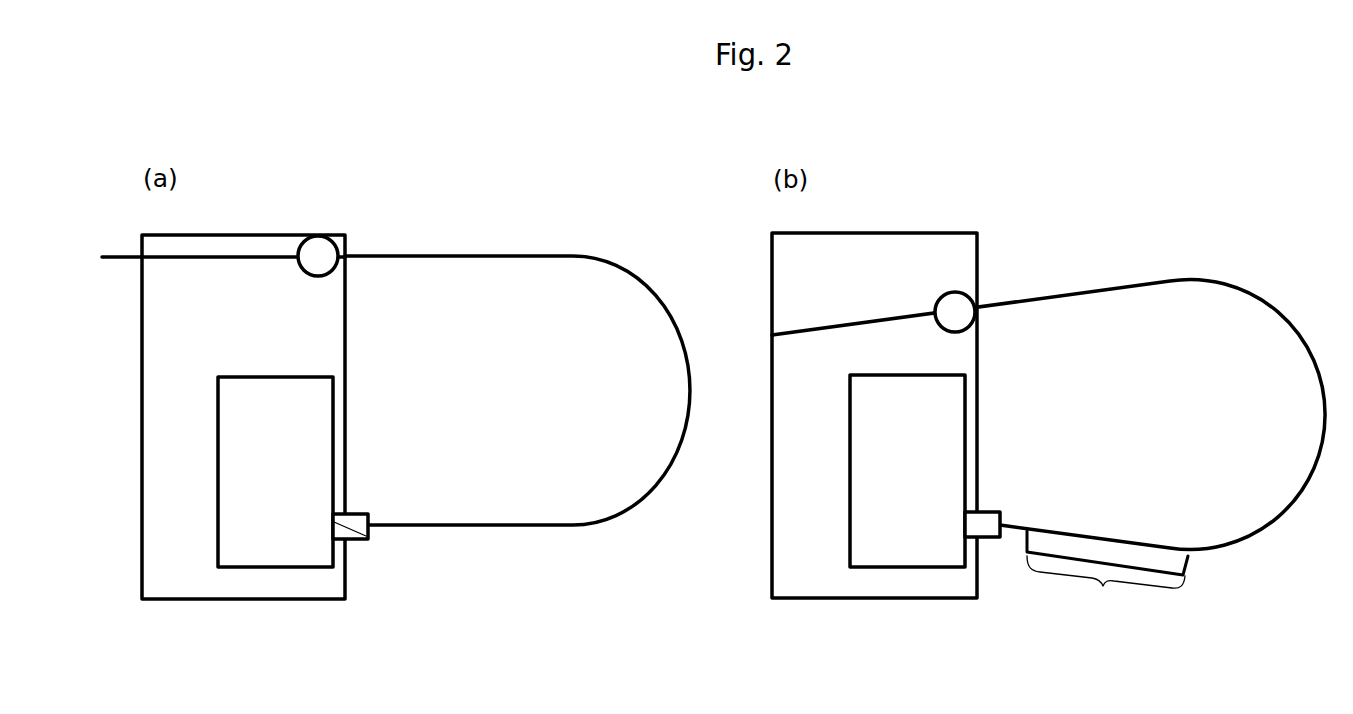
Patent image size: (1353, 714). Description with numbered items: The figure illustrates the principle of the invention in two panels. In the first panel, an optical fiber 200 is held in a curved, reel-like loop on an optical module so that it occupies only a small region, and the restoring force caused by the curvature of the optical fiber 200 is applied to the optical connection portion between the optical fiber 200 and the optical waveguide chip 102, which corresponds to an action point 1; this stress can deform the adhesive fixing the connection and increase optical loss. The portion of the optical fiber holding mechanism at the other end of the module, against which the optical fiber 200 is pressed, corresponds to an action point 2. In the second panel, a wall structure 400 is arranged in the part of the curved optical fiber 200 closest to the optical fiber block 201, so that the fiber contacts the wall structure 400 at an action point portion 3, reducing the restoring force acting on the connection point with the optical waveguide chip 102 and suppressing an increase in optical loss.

The action point 1 is at (368, 532).
The action point 2 is at (322, 247).
The action point portion 3 is at (1106, 587).
The optical waveguide chip 102 is at (278, 557).
The optical fiber 200 is at (600, 255).
The optical fiber block 201 is at (357, 512).
The wall structure 400 is at (1173, 560).